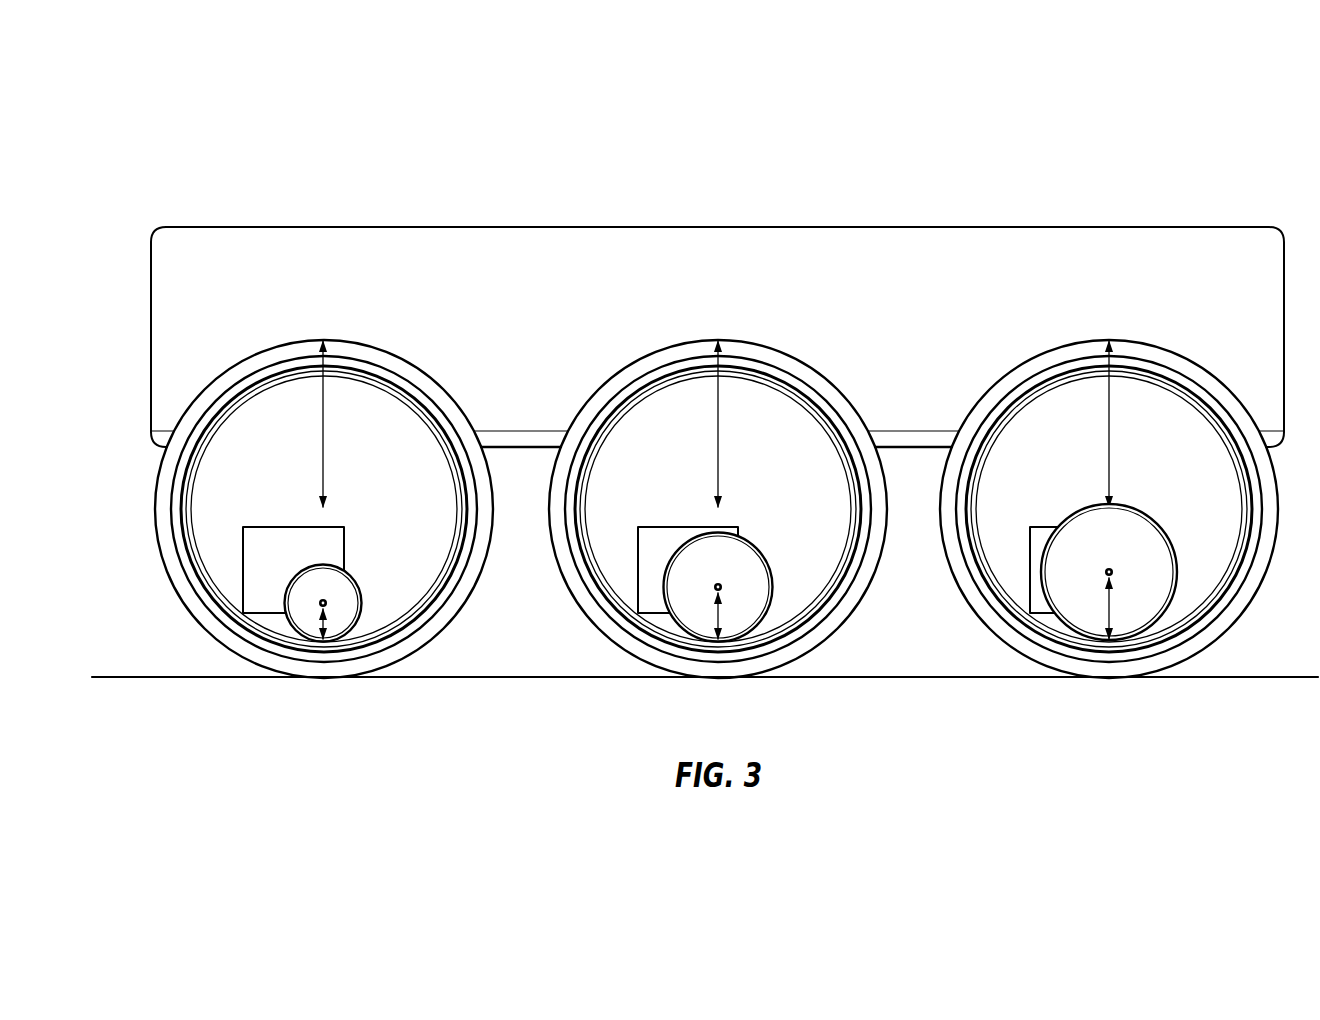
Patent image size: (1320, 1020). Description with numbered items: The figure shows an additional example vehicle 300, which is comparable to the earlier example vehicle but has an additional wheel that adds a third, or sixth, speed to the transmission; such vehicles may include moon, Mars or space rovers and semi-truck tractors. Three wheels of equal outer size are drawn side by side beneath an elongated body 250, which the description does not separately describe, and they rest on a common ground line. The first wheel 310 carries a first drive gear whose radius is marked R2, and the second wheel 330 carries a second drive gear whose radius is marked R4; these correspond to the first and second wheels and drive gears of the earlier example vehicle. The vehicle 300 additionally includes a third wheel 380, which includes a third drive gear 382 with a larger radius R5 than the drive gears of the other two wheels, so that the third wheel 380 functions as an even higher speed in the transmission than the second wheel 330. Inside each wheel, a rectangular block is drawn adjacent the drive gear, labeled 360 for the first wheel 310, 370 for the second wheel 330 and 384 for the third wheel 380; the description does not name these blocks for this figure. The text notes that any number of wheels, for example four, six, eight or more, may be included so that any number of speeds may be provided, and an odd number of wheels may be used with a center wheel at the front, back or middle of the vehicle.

The vehicle 300 is at (1224, 124).
The mounting plate 250 is at (242, 224).
The first wheel 310 is at (193, 620).
The second wheel 330 is at (587, 620).
The first drive block 360 is at (238, 552).
The second drive block 370 is at (632, 552).
The third wheel 380 is at (978, 620).
The third drive gear 382 is at (1112, 610).
The third drive block 384 is at (1029, 553).
The first hub radius R2 is at (323, 613).
The second hub radius R4 is at (717, 613).
The radius of third drive gear R5 is at (1112, 610).